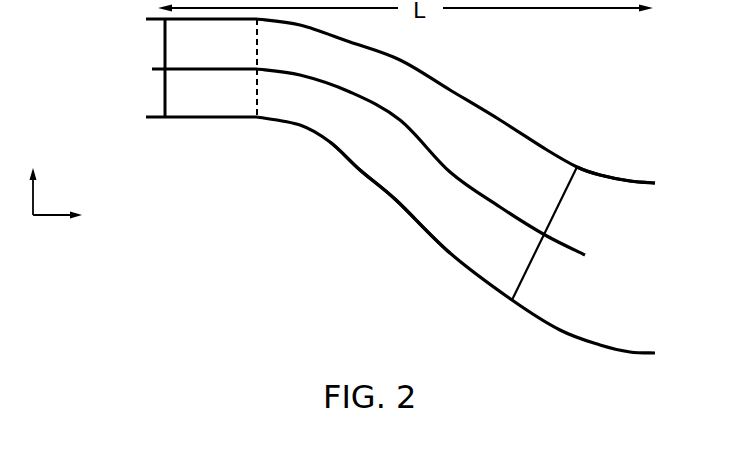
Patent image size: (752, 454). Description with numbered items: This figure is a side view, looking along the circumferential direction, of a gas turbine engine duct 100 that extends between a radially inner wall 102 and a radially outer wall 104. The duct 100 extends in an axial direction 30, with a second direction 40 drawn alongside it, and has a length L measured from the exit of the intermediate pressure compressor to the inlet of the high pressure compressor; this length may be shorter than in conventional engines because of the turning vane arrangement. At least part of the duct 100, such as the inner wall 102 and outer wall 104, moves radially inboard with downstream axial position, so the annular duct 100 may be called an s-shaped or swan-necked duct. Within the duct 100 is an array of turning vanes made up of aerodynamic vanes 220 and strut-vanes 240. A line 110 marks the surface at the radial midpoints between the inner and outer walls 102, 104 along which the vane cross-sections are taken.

The axial direction 30 is at (65, 230).
The radial direction 40 is at (35, 177).
The duct 100 is at (551, 149).
The radially inner wall 102 is at (522, 318).
The radially outer wall 104 is at (604, 172).
The line 110 is at (547, 236).
The aerodynamic vane 220 is at (217, 100).
The strut-vane 240 is at (400, 183).